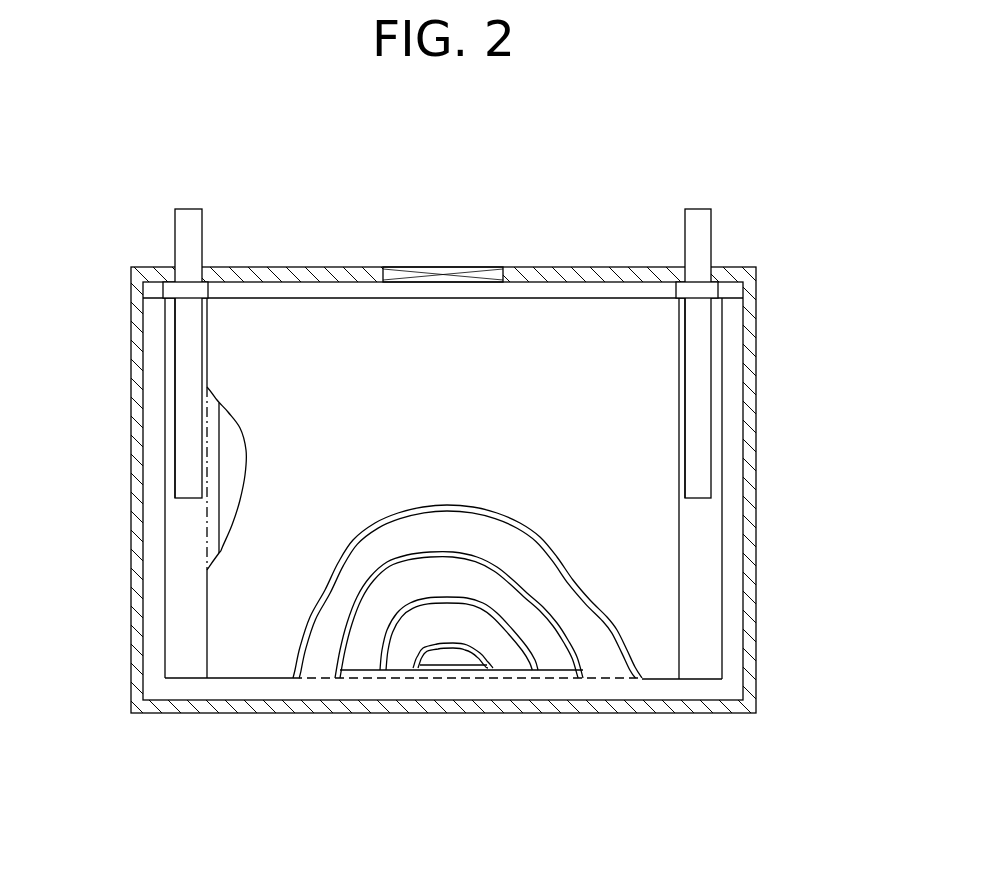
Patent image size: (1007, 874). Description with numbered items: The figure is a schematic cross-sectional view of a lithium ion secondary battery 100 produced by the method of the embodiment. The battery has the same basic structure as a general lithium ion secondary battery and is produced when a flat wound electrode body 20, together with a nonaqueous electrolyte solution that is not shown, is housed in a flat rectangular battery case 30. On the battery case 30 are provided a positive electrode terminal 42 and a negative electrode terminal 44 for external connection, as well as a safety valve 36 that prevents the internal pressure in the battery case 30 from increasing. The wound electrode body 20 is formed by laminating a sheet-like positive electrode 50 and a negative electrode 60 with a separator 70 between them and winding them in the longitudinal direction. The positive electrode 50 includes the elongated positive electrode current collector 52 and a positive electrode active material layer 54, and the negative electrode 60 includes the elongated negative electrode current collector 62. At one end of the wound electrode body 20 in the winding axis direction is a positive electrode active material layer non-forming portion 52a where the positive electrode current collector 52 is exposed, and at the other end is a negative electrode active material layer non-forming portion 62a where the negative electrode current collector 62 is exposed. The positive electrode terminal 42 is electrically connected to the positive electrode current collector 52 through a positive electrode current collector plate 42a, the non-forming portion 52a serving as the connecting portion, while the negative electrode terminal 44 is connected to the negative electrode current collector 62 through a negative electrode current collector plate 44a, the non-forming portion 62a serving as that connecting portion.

The lithium ion secondary battery 100 is at (757, 228).
The wound electrode body 20 is at (315, 328).
The battery case 30 is at (757, 390).
The safety valve 36 is at (447, 267).
The positive electrode terminal 42 is at (187, 215).
The positive electrode current collector plate 42a is at (185, 375).
The negative electrode terminal 44 is at (697, 215).
The negative electrode current collector plate 44a is at (697, 330).
The positive electrode 50 is at (316, 660).
The positive electrode current collector 52 is at (165, 560).
The positive electrode active material layer non-forming portion 52a is at (182, 652).
The positive electrode active material layer 54 is at (232, 447).
The negative electrode 60 is at (403, 657).
The negative electrode current collector 62 is at (723, 512).
The negative electrode active material layer non-forming portion 62a is at (706, 565).
The separator 70 is at (248, 602).